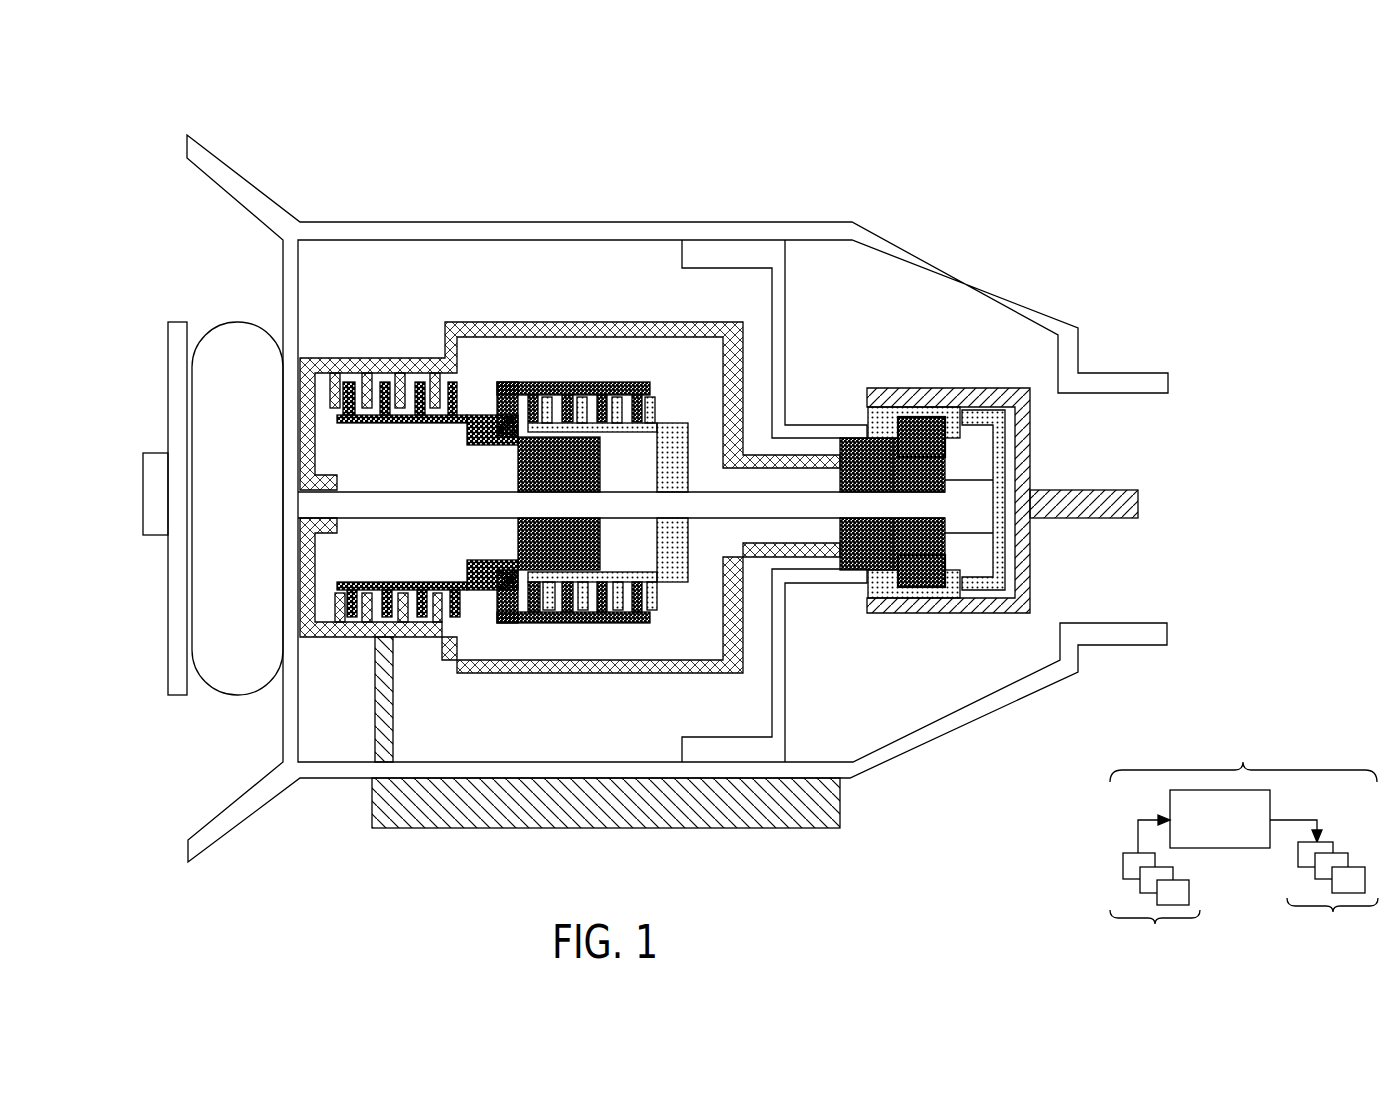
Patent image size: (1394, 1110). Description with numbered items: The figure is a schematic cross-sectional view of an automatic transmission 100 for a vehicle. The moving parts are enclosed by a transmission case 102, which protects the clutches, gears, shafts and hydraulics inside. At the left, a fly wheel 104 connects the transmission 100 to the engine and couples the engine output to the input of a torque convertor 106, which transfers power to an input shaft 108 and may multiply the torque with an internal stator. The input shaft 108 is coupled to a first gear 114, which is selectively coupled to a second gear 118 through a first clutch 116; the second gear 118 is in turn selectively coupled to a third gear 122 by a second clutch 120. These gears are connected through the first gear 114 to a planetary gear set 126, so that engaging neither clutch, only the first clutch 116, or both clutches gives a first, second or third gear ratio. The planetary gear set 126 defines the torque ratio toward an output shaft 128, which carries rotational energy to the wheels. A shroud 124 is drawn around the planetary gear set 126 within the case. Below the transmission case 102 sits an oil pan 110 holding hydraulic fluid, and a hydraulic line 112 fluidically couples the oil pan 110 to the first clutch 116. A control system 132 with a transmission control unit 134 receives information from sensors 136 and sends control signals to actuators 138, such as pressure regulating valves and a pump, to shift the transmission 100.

The automatic transmission 100 is at (1293, 94).
The transmission case 102 is at (525, 222).
The fly wheel 104 is at (143, 497).
The torque convertor 106 is at (225, 508).
The input shaft 108 is at (430, 490).
The oil pan 110 is at (606, 803).
The hydraulic line 112 is at (392, 727).
The first gear 114 is at (313, 360).
The first clutch 116 is at (362, 420).
The second gear 118 is at (600, 470).
The second clutch 120 is at (575, 390).
The third gear 122 is at (665, 423).
The shroud 124 is at (786, 335).
The planetary gear set 126 is at (920, 438).
The output shaft 128 is at (1060, 490).
The control system 132 is at (1244, 855).
The transmission control unit 134 is at (1220, 819).
The sensors 136 is at (1155, 897).
The actuators 138 is at (1324, 893).